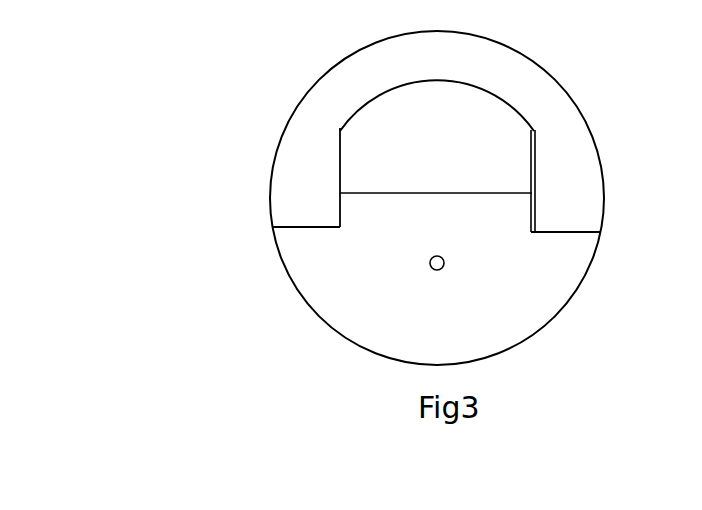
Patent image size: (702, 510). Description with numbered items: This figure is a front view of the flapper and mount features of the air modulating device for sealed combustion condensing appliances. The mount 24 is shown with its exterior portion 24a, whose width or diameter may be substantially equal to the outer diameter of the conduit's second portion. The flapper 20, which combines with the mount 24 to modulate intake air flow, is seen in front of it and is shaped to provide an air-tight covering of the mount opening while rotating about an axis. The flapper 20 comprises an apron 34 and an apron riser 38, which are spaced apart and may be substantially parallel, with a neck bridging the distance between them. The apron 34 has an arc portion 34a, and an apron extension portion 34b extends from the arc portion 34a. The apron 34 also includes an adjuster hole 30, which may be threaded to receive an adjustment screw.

The flapper 20 is at (550, 292).
The mount 24 is at (575, 165).
The exterior portion 24a is at (290, 191).
The adjuster hole 30 is at (426, 270).
The apron 34 is at (573, 272).
The arc portion 34a is at (308, 280).
The apron extension portion 34b is at (513, 214).
The apron riser 38 is at (508, 134).